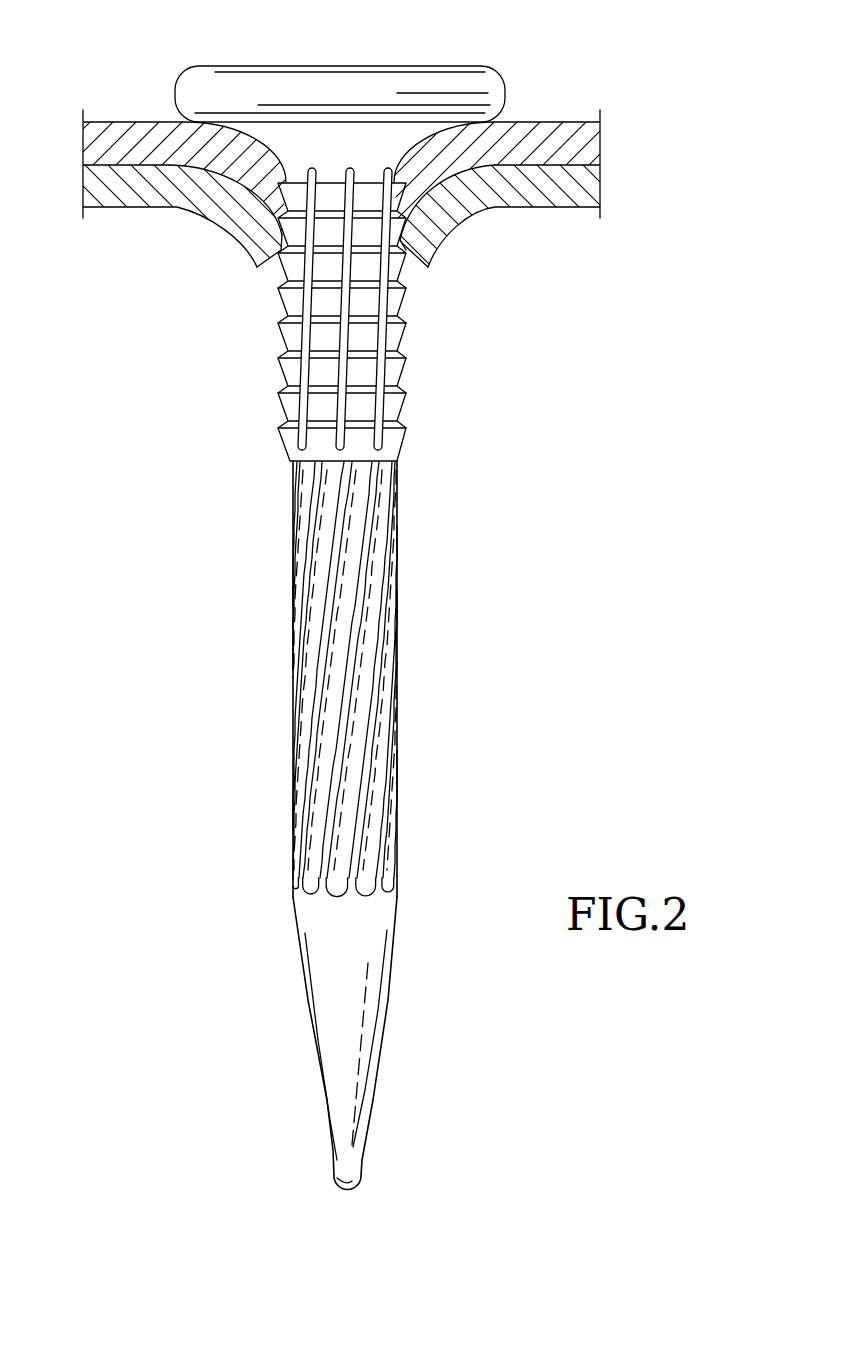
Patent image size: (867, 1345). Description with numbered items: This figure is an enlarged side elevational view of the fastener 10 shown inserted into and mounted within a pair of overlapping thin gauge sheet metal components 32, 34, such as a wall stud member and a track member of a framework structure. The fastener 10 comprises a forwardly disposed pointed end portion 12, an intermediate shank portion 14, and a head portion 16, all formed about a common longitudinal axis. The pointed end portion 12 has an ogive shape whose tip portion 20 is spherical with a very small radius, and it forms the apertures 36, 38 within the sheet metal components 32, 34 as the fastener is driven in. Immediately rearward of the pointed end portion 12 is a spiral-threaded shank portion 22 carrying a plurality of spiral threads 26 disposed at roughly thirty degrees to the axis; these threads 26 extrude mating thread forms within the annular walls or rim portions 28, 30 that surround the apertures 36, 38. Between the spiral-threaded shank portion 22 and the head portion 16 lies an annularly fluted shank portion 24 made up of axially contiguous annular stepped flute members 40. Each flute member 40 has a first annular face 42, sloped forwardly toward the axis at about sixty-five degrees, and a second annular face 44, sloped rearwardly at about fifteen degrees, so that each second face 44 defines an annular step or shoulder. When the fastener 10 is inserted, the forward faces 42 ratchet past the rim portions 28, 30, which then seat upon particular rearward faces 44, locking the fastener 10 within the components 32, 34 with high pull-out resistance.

The fastener 10 is at (577, 423).
The forwardly disposed pointed end portion 12 is at (352, 1022).
The intermediate shank portion 14 is at (394, 490).
The head portion 16 is at (385, 92).
The tip portion 20 is at (348, 1192).
The spiral-threaded shank portion 22 is at (352, 716).
The annularly fluted shank portion 24 is at (283, 362).
The spiral threads 26 is at (363, 678).
The annular wall or rim portion 28 is at (268, 221).
The annular wall or rim portion 30 is at (281, 262).
The thin gauge sheet metal component 32 is at (568, 132).
The thin gauge sheet metal component 34 is at (548, 196).
The aperture 36 is at (443, 235).
The aperture 38 is at (410, 272).
The annular stepped flute member 40 is at (360, 307).
The first annular face 42 is at (406, 378).
The second annular face 44 is at (282, 318).